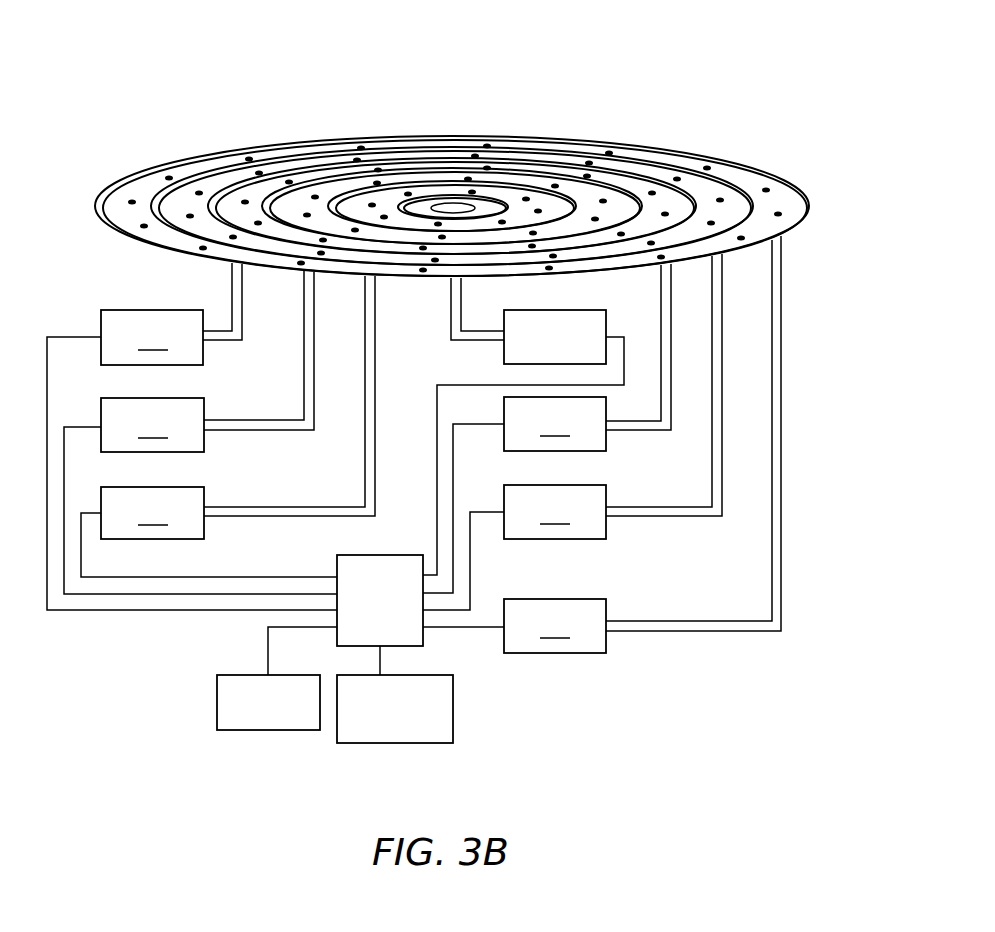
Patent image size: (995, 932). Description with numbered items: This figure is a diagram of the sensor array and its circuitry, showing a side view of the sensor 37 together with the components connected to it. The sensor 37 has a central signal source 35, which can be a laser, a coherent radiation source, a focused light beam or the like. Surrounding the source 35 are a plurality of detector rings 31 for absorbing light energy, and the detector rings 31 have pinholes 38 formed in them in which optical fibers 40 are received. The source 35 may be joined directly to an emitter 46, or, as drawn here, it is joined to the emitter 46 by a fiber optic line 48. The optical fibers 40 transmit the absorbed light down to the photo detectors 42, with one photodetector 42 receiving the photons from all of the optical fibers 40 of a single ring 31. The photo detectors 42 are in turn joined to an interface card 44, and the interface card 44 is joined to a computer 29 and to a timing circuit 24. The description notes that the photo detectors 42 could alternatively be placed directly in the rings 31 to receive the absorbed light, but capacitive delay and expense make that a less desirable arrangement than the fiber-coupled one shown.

The sensor 37 is at (644, 112).
The detector rings 31 is at (224, 164).
The pinholes 38 is at (137, 226).
The central signal source 35 is at (452, 205).
The optical fibers 40 is at (232, 292).
The photo detectors 42 is at (326, 481).
The interface card 44 is at (365, 613).
The emitter 46 is at (540, 350).
The fiber optic line 48 is at (457, 303).
The timing circuit 24 is at (253, 716).
The computer 29 is at (378, 721).